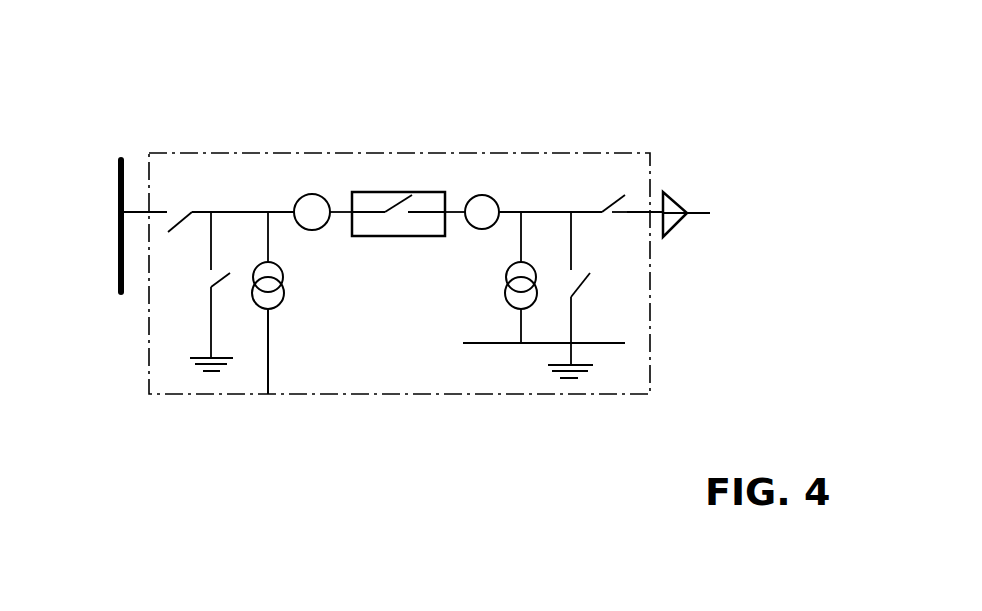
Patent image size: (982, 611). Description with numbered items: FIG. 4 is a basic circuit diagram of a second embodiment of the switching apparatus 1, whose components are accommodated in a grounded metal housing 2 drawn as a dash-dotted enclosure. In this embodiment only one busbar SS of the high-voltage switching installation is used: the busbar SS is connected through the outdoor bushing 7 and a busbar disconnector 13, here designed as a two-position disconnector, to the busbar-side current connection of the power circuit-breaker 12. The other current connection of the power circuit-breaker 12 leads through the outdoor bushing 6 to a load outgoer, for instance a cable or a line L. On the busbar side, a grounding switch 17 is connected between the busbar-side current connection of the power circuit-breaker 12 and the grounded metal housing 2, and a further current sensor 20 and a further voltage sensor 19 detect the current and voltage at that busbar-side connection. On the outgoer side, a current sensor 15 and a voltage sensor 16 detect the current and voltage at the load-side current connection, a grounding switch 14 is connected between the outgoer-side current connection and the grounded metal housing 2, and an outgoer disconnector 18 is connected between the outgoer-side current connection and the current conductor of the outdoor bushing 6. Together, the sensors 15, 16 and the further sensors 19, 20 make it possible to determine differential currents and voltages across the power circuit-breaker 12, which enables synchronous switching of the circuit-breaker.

The switchgear installation 1 is at (415, 323).
The metal housing 2 is at (370, 394).
The outdoor bushing 6 is at (647, 212).
The outdoor bushing 7 is at (149, 213).
The power circuit-breaker 12 is at (398, 192).
The busbar disconnector 13 is at (182, 211).
The grounding switch 14 is at (585, 287).
The current sensor 15 is at (482, 212).
The voltage sensor 16 is at (517, 297).
The grounding switch 17 is at (210, 283).
The outgoer disconnector 18 is at (617, 215).
The further voltage sensor 19 is at (265, 296).
The further current sensor 20 is at (312, 212).
The busbar SS is at (121, 160).
The line L is at (687, 210).